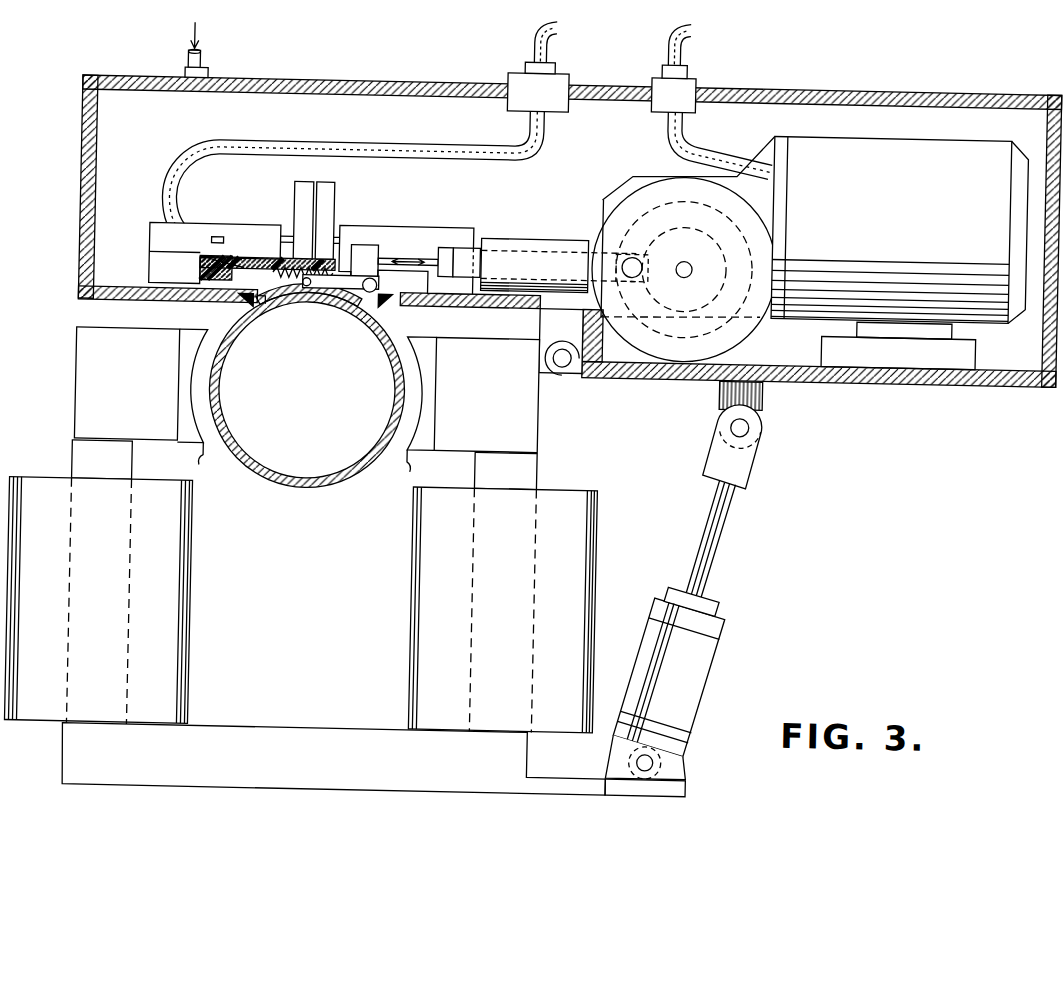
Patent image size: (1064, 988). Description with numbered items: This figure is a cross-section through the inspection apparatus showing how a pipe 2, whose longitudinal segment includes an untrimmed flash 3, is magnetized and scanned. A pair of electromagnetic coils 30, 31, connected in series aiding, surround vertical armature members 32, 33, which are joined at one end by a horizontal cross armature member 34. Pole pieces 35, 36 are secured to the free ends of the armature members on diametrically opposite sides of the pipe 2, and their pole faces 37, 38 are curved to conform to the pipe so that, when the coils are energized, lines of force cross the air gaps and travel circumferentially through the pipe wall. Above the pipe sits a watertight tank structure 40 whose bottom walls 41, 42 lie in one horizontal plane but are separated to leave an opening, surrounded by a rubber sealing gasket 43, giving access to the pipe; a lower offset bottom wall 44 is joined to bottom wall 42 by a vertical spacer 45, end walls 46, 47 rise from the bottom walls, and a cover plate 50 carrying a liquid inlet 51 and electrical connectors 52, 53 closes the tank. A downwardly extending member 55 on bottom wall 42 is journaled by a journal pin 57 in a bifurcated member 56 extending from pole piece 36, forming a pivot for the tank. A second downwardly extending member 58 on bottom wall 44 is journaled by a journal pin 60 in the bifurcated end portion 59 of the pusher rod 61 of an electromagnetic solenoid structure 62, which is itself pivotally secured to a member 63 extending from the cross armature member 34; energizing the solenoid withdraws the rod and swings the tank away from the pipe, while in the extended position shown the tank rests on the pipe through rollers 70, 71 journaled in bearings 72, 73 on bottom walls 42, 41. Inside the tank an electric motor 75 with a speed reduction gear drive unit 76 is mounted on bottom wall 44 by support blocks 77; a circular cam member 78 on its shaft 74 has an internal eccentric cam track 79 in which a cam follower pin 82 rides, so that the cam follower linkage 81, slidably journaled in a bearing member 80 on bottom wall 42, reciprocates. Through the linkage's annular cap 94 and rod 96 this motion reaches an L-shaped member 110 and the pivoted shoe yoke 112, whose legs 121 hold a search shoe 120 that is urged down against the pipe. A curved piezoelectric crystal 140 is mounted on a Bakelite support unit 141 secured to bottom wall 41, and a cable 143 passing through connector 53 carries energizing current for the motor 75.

The tubular member 2 is at (248, 455).
The untrimmed flash 3 is at (305, 300).
The electromagnetic coil 30 is at (201, 610).
The electromagnetic coil 31 is at (422, 598).
The vertical armature member 32 is at (80, 460).
The vertical armature member 33 is at (545, 458).
The horizontal cross armature member 34 is at (297, 723).
The pole piece 35 is at (82, 401).
The pole piece 36 is at (545, 406).
The pole face 37 is at (204, 459).
The pole face 38 is at (402, 464).
The tank structure 40 is at (538, 234).
The bottom wall 41 is at (152, 299).
The bottom wall 42 is at (446, 299).
The rubber sealing gasket 43 is at (245, 300).
The lower offset bottom wall 44 is at (900, 367).
The vertical spacer 45 is at (605, 352).
The end wall 46 is at (98, 170).
The end wall 47 is at (1048, 106).
The cover plate 50 is at (828, 76).
The liquid inlet 51 is at (208, 66).
The connector 52 is at (512, 66).
The connector 53 is at (657, 66).
The downwardly extending member 55 is at (551, 353).
The bifurcated member 56 is at (573, 364).
The journal pin 57 is at (572, 339).
The downwardly extending member 58 is at (770, 385).
The bifurcated end portion 59 is at (752, 447).
The journal pin 60 is at (756, 414).
The pusher rod 61 is at (735, 506).
The electromagnetic solenoid structure 62 is at (712, 637).
The member 63 is at (700, 778).
The roller 70 is at (337, 188).
The roller 71 is at (297, 190).
The bearing 72 is at (422, 245).
The bearing 73 is at (228, 221).
The shaft 74 is at (694, 254).
The electric motor 75 is at (872, 122).
The speed reduction gear drive unit 76 is at (684, 248).
The support blocks 77 is at (981, 340).
The circular cam member 78 is at (738, 328).
The internal eccentric cam track 79 is at (693, 182).
The bearing member 80 is at (535, 230).
The cam follower linkage 81 is at (472, 240).
The cam follower pin 82 is at (646, 248).
The annular cap 94 is at (450, 236).
The rod 96 is at (405, 252).
The L-shaped member 110 is at (378, 239).
The shoe yoke 112 is at (395, 151).
The search shoe 120 is at (272, 308).
The leg 121 is at (335, 284).
The curved piezoelectric crystal 140 is at (266, 254).
The support unit 141 is at (204, 264).
The cable 143 is at (669, 128).